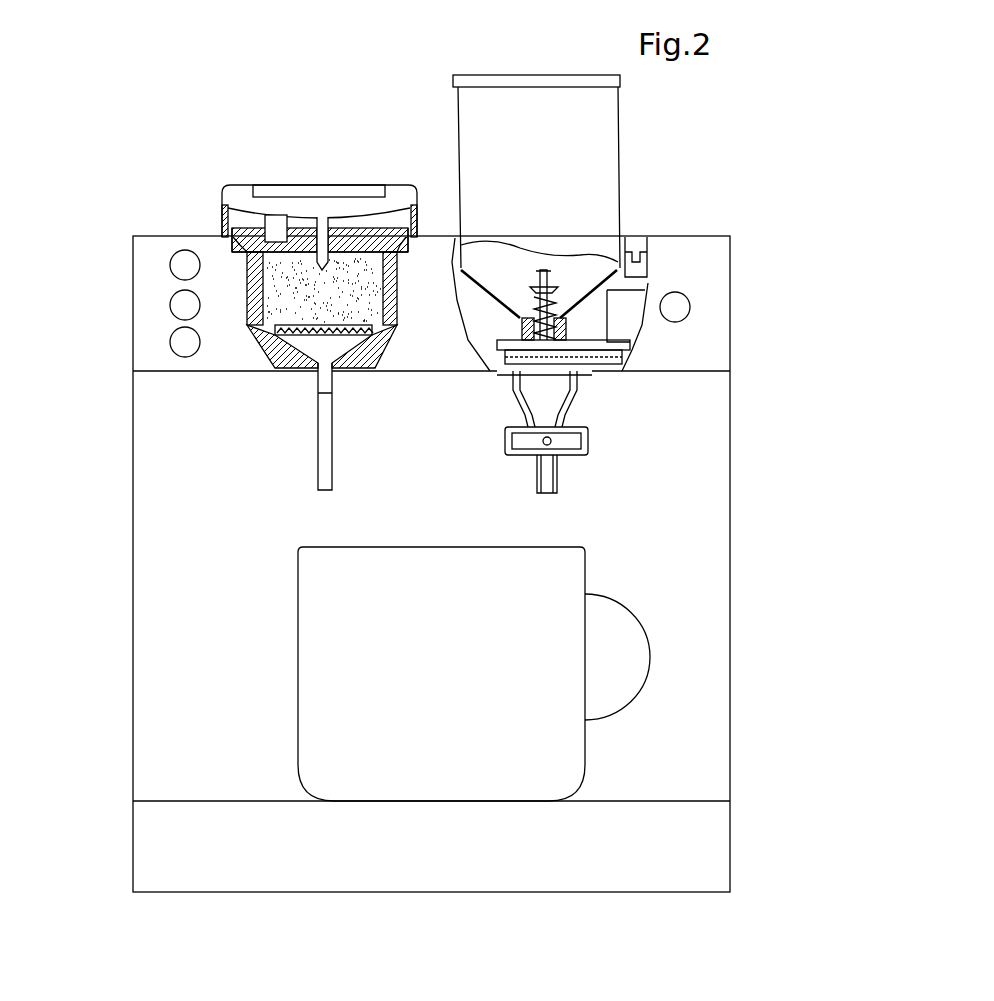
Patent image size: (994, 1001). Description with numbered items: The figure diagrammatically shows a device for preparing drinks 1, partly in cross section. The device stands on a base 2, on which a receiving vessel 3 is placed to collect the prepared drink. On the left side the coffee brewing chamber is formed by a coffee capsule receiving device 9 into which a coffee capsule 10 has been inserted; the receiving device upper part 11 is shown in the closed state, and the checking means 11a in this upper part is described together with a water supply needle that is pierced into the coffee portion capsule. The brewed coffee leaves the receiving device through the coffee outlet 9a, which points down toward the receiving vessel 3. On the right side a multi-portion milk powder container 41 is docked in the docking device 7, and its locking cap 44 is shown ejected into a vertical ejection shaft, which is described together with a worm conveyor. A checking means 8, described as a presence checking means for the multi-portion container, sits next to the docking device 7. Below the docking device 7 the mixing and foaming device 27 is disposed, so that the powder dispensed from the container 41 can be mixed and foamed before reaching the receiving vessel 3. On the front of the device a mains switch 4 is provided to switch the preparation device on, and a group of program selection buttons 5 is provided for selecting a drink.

The device for preparing drinks 1 is at (347, 138).
The base of the device 2 is at (220, 850).
The receiving vessel 3 is at (374, 667).
The mains switch 4 is at (690, 303).
The group of program selection buttons 5 is at (170, 342).
The docking device 7 is at (630, 348).
The checking means 8 is at (637, 257).
The coffee capsule receiving device 9 is at (257, 313).
The coffee outlet 9a is at (323, 435).
The coffee capsule 10 is at (307, 288).
The receiving device upper part 11 is at (283, 205).
The checking means 11a is at (277, 230).
The mixing and foaming device 27 is at (610, 433).
The multi-portion milk powder container 41 is at (508, 152).
The locking cap 44 is at (553, 280).